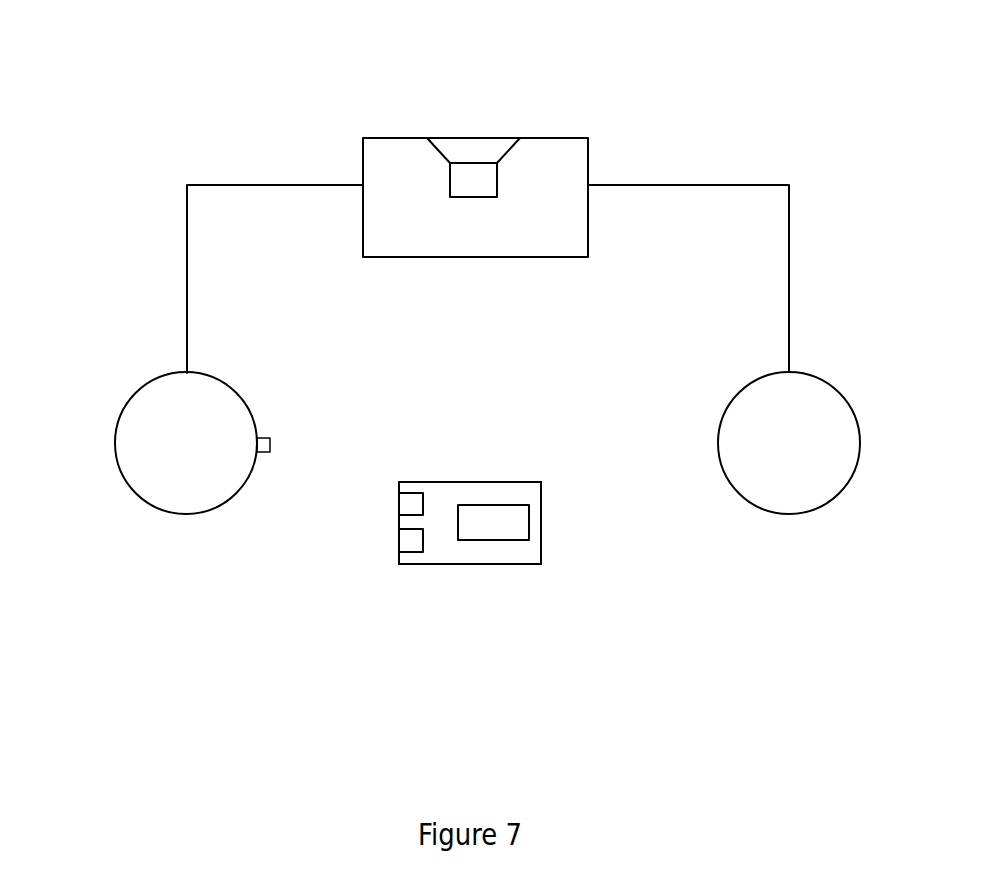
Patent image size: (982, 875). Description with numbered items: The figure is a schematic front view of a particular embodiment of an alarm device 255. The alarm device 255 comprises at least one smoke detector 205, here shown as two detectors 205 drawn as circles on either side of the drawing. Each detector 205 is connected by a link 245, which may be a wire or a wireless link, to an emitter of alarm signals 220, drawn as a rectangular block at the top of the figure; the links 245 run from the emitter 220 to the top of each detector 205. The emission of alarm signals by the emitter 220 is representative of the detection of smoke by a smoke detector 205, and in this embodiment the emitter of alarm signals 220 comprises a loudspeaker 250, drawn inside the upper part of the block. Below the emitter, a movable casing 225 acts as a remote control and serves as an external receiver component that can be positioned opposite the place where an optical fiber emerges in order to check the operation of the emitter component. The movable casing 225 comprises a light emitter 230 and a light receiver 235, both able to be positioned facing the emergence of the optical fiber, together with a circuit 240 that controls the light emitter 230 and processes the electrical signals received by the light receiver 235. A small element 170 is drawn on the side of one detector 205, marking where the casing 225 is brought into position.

The sensor 170 is at (260, 437).
The smoke detector 205 is at (182, 505).
The emitter of alarm signals 220 is at (536, 248).
The movable casing 225 is at (493, 492).
The light emitter 230 is at (412, 503).
The light receiver 235 is at (410, 538).
The circuit 240 is at (482, 528).
The link 245 is at (751, 190).
The loudspeaker 250 is at (482, 150).
The alarm device 255 is at (392, 632).